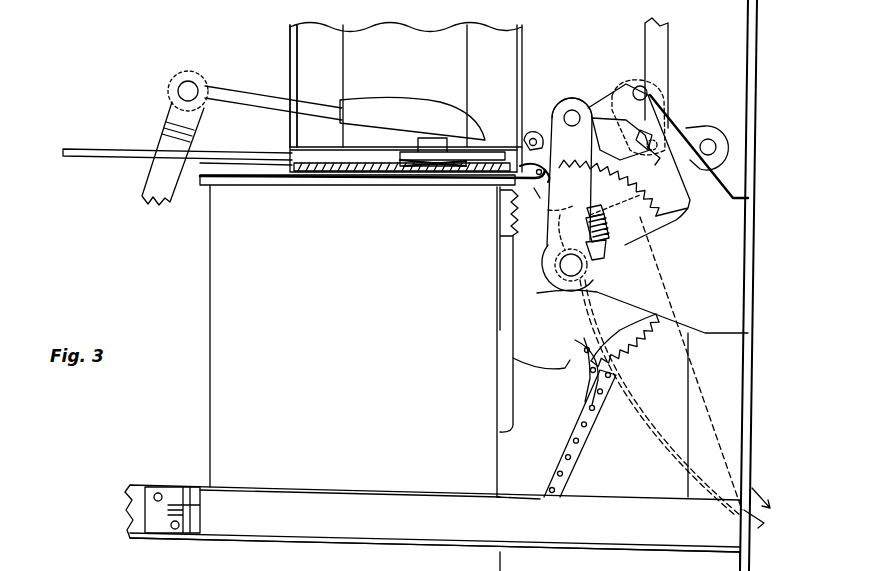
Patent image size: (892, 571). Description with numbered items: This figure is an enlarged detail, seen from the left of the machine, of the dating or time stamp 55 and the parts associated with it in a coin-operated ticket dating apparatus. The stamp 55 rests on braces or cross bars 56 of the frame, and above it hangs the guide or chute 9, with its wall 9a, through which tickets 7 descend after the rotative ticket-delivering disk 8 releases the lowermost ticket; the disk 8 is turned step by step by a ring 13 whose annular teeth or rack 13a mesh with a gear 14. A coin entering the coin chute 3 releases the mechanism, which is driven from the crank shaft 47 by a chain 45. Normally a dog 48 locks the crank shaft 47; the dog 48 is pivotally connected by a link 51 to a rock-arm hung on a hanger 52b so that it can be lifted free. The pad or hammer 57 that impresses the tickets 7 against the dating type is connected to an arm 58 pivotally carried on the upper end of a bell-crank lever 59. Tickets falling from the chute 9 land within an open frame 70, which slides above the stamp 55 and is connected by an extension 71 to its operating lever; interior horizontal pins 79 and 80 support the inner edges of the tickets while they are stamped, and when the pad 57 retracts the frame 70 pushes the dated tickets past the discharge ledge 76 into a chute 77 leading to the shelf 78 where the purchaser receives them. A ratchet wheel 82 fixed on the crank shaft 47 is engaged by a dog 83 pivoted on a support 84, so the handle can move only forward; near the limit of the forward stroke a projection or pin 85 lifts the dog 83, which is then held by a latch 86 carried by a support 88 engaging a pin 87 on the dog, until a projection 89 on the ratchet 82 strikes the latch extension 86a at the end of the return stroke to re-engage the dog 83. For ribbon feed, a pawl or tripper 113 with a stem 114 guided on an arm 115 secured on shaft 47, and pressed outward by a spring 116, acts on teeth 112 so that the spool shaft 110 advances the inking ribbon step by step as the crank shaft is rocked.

The coin chute 3 is at (592, 561).
The tickets 7 is at (322, 160).
The ticket-delivering disk 8 is at (350, 530).
The guide or chute 9 is at (406, 98).
The housing wall 9a is at (290, 45).
The ring 13 is at (489, 561).
The annular teeth or rack 13a is at (416, 534).
The gear 14 is at (435, 554).
The chain 45 is at (590, 462).
The crank shaft 47 is at (566, 264).
The dog 48 is at (699, 146).
The link 51 is at (650, 42).
The hanger 52b is at (262, 570).
The dating or time stamp 55 is at (357, 336).
The braces or cross bars 56 is at (432, 518).
The pad or hammer 57 is at (432, 160).
The arm 58 is at (228, 93).
The bell-crank lever 59 is at (143, 180).
The open frame 70 is at (286, 150).
The extension 71 is at (86, 152).
The spring 76 is at (534, 192).
The chute 77 is at (661, 366).
The shelf 78 is at (758, 524).
The interior horizontal pin 79 is at (318, 172).
The interior horizontal pin 80 is at (375, 172).
The ratchet wheel 82 is at (630, 393).
The dog 83 is at (587, 100).
The support 84 is at (562, 105).
The projection or pin 85 is at (533, 136).
The latch 86 is at (608, 128).
The extension 86a is at (624, 170).
The pin 87 is at (651, 140).
The support 88 is at (656, 104).
The projection 89 is at (575, 388).
The shaft 110 is at (502, 209).
The teeth 112 is at (521, 330).
The pawl or tripper 113 is at (597, 208).
The stem 114 is at (588, 232).
The arm 115 is at (572, 250).
The spring 116 is at (598, 230).